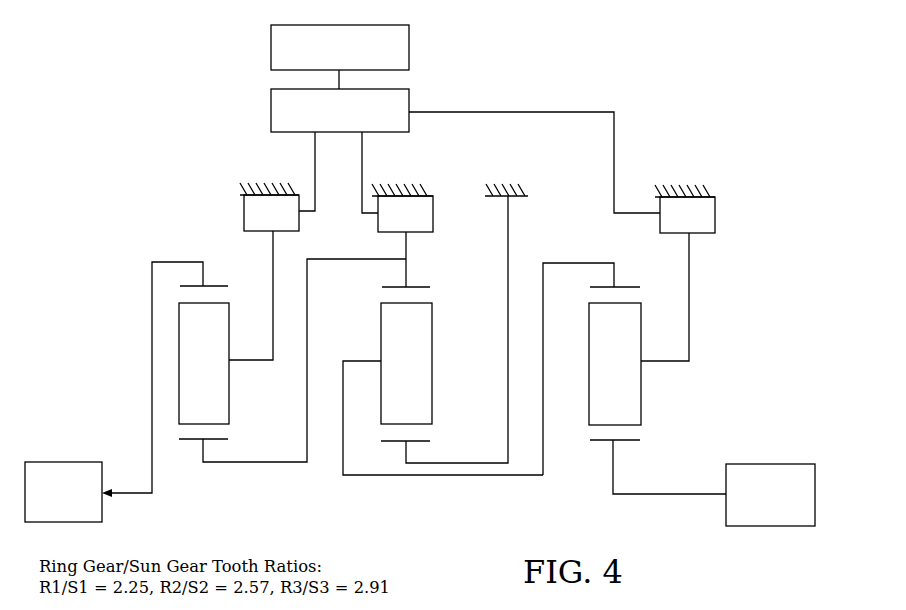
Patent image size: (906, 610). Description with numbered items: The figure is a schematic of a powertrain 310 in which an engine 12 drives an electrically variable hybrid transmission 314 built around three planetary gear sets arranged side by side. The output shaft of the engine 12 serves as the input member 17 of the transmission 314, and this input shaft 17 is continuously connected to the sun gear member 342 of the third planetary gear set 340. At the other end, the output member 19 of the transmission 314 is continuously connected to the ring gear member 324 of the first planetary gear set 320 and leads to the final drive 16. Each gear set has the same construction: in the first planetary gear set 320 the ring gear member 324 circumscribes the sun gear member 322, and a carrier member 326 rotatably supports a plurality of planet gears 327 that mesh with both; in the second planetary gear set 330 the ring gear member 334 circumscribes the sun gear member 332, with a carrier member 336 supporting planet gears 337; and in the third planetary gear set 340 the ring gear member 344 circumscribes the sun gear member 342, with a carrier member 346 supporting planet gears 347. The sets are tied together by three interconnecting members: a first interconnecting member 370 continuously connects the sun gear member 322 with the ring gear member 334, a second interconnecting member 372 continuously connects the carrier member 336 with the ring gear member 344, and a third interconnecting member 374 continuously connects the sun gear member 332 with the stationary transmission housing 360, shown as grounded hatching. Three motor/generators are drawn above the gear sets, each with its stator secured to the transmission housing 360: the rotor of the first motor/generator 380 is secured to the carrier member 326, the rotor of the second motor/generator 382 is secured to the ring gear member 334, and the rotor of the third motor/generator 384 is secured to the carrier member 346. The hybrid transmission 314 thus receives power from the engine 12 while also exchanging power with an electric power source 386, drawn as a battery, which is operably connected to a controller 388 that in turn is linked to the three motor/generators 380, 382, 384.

The powertrain 310 is at (128, 110).
The electrically variable transmission 314 is at (90, 146).
The electric power source 386 is at (271, 45).
The controller 388 is at (271, 108).
The first motor/generator 380 is at (238, 196).
The second motor/generator 382 is at (440, 199).
The third motor/generator 384 is at (724, 199).
The transmission housing 360 is at (278, 183).
The planet gears 327 is at (204, 363).
The ring gear member 324 is at (218, 285).
The carrier member 326 is at (236, 368).
The sun gear member 322 is at (188, 442).
The first planetary gear set 320 is at (216, 450).
The first interconnecting member 370 is at (282, 463).
The output member 19 is at (118, 494).
The final drive 16 is at (85, 435).
The planet gears 337 is at (406, 363).
The ring gear member 334 is at (420, 287).
The carrier member 336 is at (372, 354).
The sun gear member 332 is at (390, 443).
The second planetary gear set 330 is at (419, 450).
The third interconnecting member 374 is at (473, 465).
The second interconnecting member 372 is at (523, 477).
The planet gears 347 is at (615, 364).
The ring gear member 344 is at (603, 285).
The carrier member 346 is at (650, 370).
The sun gear member 342 is at (595, 443).
The third planetary gear set 340 is at (623, 450).
The input member 17 is at (705, 495).
The engine 12 is at (758, 446).